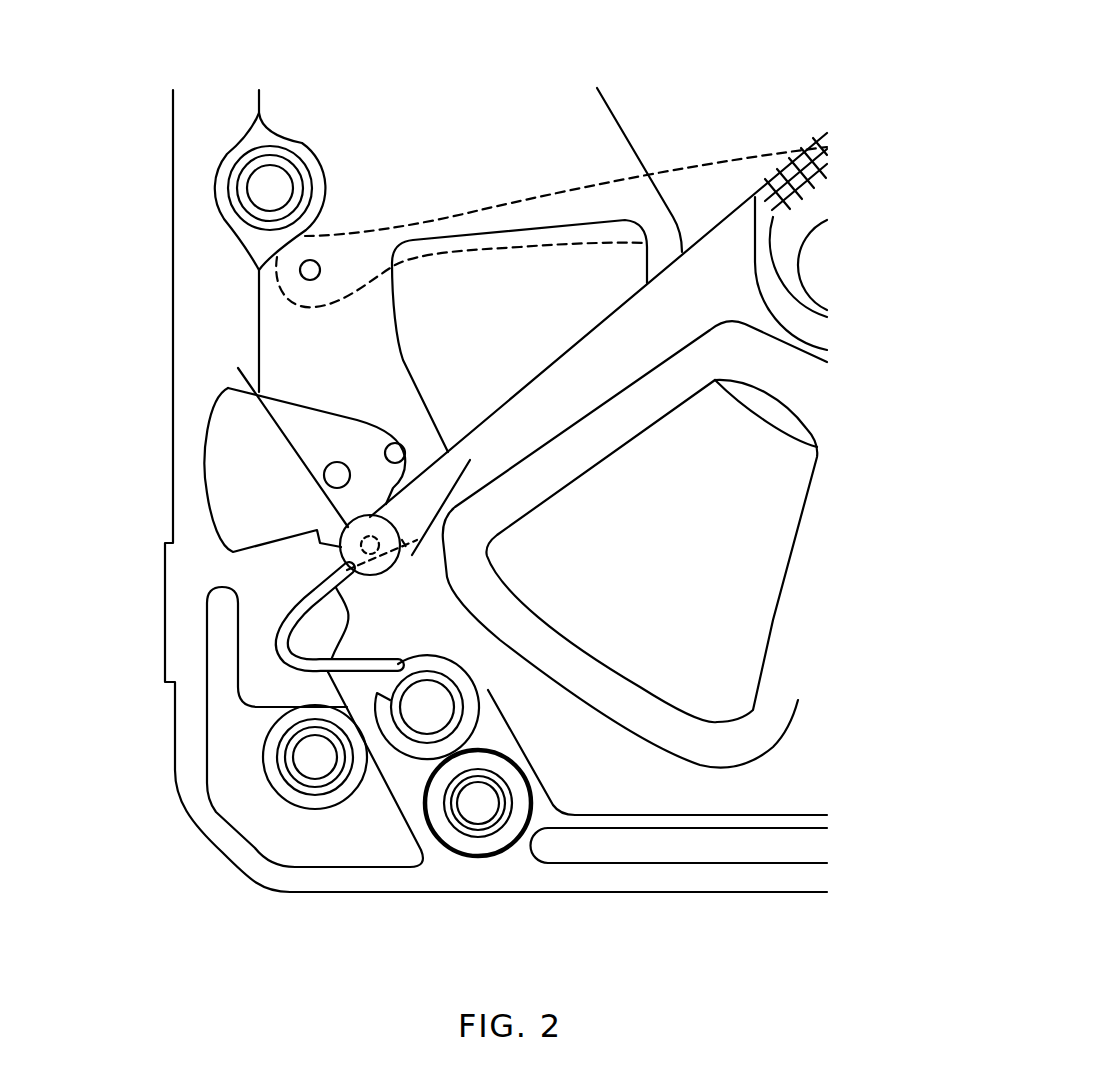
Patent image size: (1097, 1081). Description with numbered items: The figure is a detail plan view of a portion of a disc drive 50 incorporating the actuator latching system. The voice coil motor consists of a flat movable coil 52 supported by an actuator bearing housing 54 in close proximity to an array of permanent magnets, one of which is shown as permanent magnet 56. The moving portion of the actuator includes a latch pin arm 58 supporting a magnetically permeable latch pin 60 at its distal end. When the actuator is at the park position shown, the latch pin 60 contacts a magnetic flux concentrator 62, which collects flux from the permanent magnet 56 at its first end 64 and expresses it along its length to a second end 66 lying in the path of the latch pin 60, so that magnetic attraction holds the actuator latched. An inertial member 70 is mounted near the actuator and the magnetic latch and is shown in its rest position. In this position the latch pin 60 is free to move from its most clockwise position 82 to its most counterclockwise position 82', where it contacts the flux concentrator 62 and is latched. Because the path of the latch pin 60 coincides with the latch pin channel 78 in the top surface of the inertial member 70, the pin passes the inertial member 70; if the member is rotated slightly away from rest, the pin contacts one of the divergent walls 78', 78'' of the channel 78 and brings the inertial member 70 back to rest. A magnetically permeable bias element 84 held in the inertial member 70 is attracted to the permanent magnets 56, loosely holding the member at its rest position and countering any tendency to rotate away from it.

The disc drive 50 is at (158, 224).
The flat movable coil 52 is at (658, 727).
The actuator bearing housing 54 is at (785, 260).
The permanent magnet 56 is at (582, 260).
The latch pin arm 58 is at (585, 360).
The latch pin 60 is at (372, 552).
The magnetic flux concentrator 62 is at (307, 592).
The first end 64 is at (463, 693).
The second end 66 is at (383, 552).
The inertial member 70 is at (228, 437).
The latch pin channel 78 is at (317, 411).
The divergent wall 78' is at (272, 432).
The divergent wall 78'' is at (377, 407).
The most clockwise position 82 is at (344, 232).
The most counterclockwise position 82' is at (436, 437).
The bias element 84 is at (402, 446).